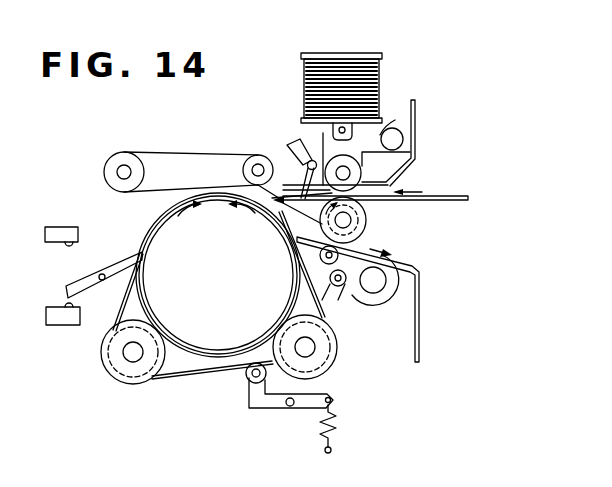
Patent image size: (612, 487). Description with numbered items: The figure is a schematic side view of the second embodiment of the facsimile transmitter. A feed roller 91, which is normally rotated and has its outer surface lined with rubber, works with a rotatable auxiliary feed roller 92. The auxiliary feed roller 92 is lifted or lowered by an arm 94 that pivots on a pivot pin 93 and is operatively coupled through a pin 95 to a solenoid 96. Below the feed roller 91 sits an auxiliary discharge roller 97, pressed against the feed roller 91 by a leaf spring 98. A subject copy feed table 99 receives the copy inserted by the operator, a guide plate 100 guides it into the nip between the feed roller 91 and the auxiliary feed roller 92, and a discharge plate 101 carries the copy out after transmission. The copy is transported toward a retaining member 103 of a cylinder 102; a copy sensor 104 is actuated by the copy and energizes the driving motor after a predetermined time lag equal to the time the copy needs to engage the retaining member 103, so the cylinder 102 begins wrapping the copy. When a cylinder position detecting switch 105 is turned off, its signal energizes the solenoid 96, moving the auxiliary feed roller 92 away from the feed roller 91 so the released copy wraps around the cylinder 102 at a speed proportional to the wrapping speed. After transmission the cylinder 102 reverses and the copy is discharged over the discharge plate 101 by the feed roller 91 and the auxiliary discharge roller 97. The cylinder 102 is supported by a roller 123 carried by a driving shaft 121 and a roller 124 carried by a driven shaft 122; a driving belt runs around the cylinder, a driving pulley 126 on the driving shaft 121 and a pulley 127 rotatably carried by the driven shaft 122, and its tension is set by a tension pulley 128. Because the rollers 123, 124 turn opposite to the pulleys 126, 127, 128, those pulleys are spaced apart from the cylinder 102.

The feed roller 91 is at (368, 218).
The auxiliary feed roller 92 is at (364, 173).
The pivot pin 93 is at (400, 133).
The arm 94 is at (378, 135).
The pin 95 is at (333, 128).
The solenoid 96 is at (355, 62).
The auxiliary discharge roller 97 is at (320, 258).
The leaf spring 98 is at (362, 292).
The subject copy feed table 99 is at (455, 200).
The guide plate 100 is at (418, 136).
The discharge plate 101 is at (420, 263).
The cylinder 102 is at (190, 358).
The retaining member 103 is at (228, 190).
The copy sensor 104 is at (218, 275).
The cylinder position detecting switch 105 is at (58, 327).
The driving shaft 121 is at (300, 340).
The driven shaft 122 is at (143, 347).
The roller 123 is at (325, 372).
The roller 124 is at (108, 373).
The driving pulley 126 is at (327, 374).
The pulley 127 is at (110, 371).
The tension pulley 128 is at (247, 373).